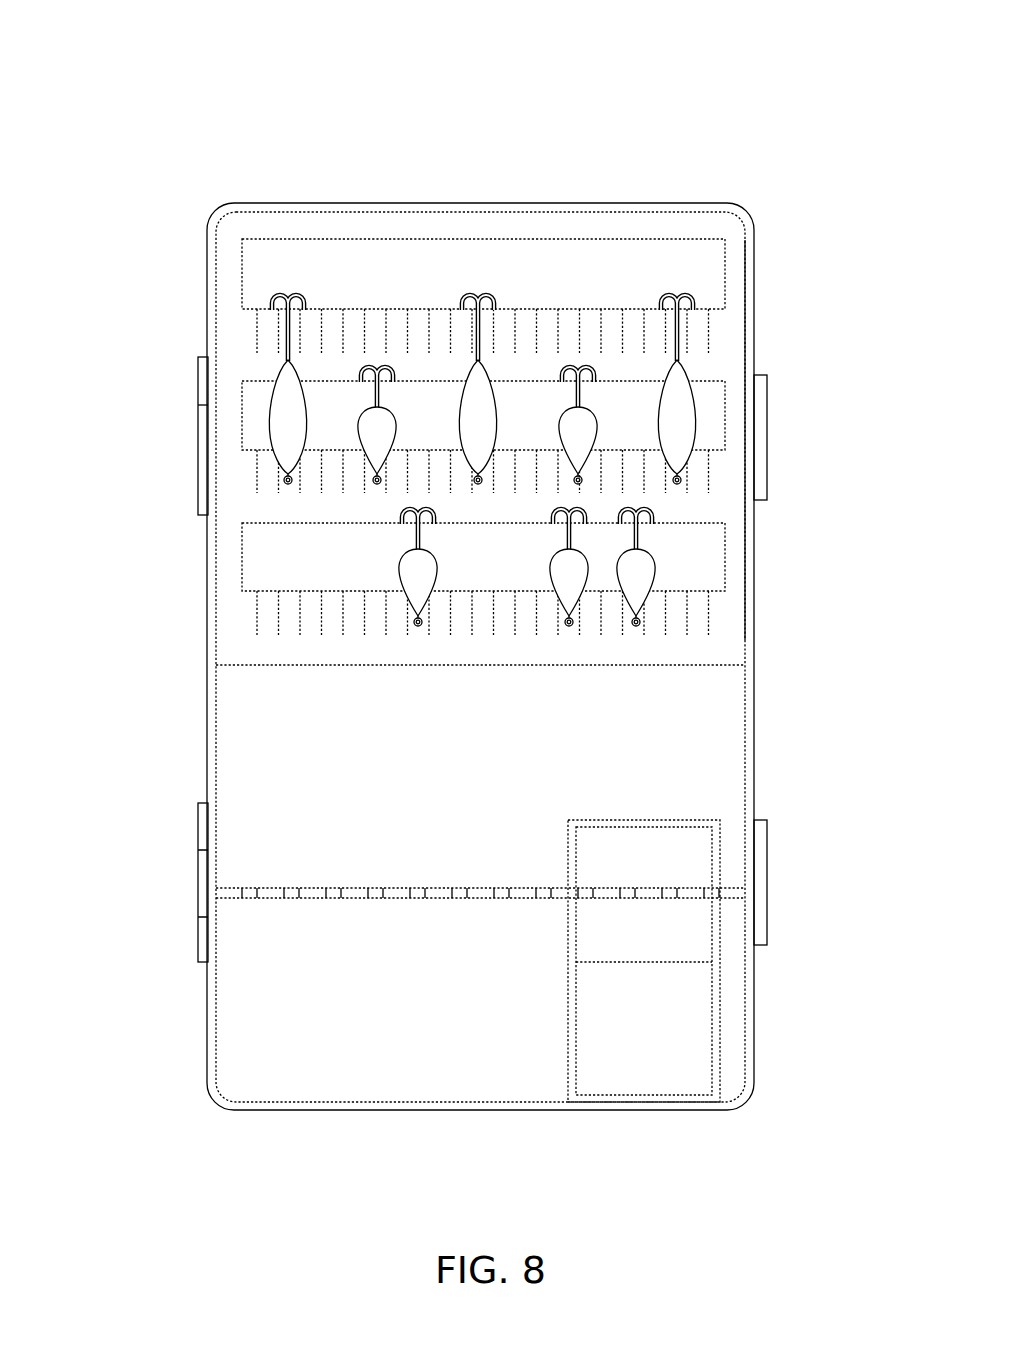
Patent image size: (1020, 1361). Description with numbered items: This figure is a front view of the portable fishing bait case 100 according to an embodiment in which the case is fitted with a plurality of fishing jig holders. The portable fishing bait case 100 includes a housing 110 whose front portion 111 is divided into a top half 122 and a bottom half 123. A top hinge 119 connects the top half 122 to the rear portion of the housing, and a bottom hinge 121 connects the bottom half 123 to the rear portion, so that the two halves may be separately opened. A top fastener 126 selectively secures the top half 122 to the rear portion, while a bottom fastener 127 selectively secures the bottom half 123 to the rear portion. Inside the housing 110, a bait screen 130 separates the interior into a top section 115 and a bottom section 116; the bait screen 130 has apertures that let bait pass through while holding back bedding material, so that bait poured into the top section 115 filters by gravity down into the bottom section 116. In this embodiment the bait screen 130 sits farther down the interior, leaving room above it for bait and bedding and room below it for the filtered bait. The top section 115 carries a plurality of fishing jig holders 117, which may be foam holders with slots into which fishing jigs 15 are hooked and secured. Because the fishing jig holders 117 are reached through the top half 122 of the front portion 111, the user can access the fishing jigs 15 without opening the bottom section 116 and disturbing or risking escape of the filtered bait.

The portable fishing bait case 100 is at (740, 103).
The housing 110 is at (505, 220).
The front portion 111 is at (318, 224).
The top section 115 is at (395, 232).
The fishing jig holders 117 is at (607, 277).
The fishing jigs 15 is at (290, 405).
The top half 122 is at (737, 330).
The top hinge 119 is at (195, 447).
The top fastener 126 is at (765, 412).
The bottom hinge 121 is at (197, 880).
The bottom fastener 127 is at (770, 888).
The bait screen 130 is at (286, 895).
The bottom half 123 is at (385, 1043).
The bottom section 116 is at (455, 1013).